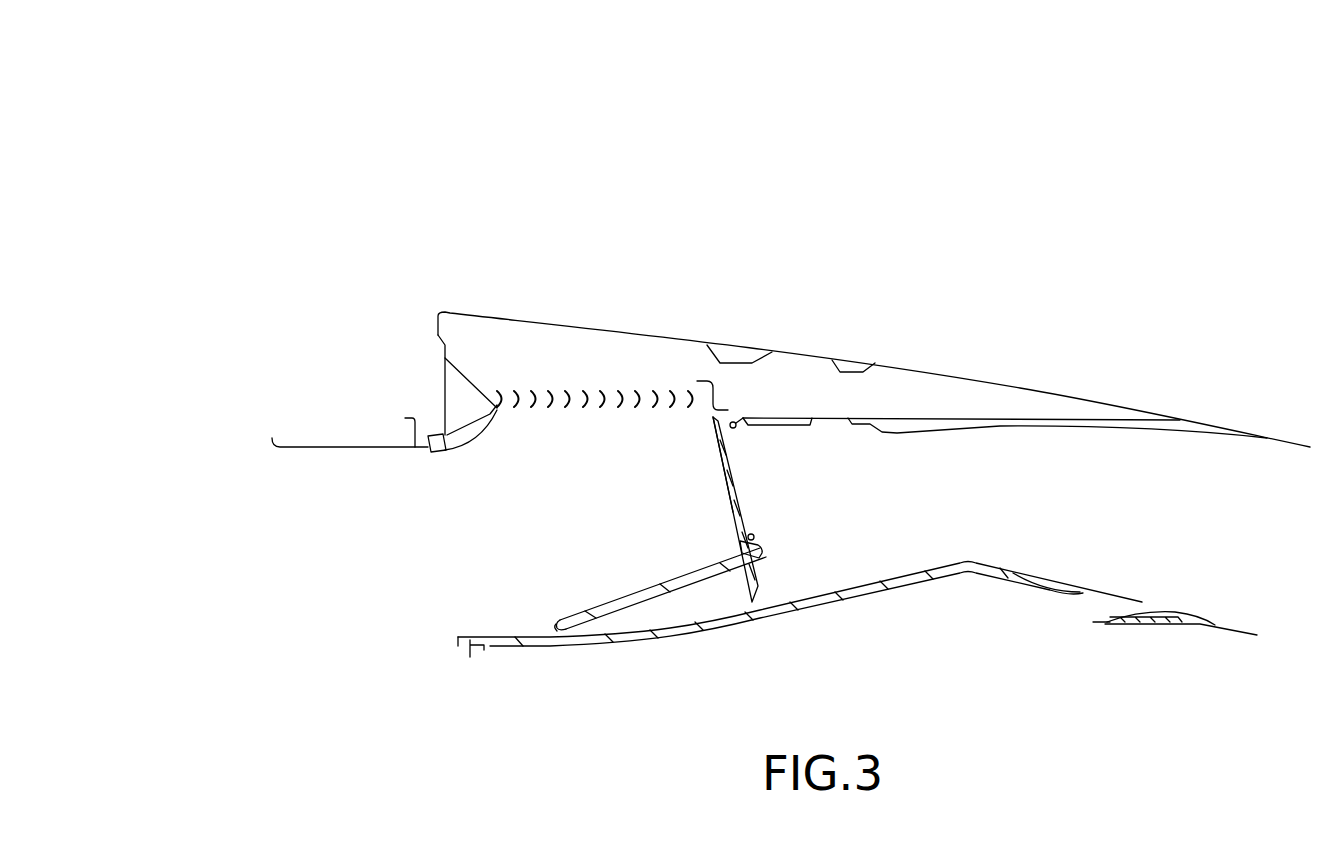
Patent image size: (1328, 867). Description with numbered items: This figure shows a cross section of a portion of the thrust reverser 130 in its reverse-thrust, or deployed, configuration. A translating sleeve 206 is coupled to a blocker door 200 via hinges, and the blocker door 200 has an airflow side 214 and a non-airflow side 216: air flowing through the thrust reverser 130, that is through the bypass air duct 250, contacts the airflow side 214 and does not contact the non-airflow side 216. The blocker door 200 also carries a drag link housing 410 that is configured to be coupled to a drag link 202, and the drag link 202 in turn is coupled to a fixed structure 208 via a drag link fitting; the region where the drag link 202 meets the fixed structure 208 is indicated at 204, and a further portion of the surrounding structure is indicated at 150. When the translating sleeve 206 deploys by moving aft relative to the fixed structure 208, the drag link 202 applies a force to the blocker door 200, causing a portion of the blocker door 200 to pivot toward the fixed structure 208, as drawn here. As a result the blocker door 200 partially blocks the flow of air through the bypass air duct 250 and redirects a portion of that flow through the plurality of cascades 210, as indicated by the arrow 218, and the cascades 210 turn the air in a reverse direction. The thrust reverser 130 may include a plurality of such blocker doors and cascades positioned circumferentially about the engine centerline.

The thrust reverser 130 is at (1216, 162).
The pylon fairing / aft attachment 150 is at (1157, 610).
The blocker door 200 is at (738, 500).
The drag link 202 is at (645, 600).
The link arm hinge end 204 is at (557, 631).
The translating sleeve 206 is at (918, 368).
The fixed structure 208 is at (807, 617).
The cascades 210 is at (585, 390).
The airflow side 214 is at (728, 477).
The non-airflow side 216 is at (737, 475).
The arrow 218 is at (569, 420).
The bypass air duct 250 is at (623, 528).
The drag link housing 410 is at (758, 547).